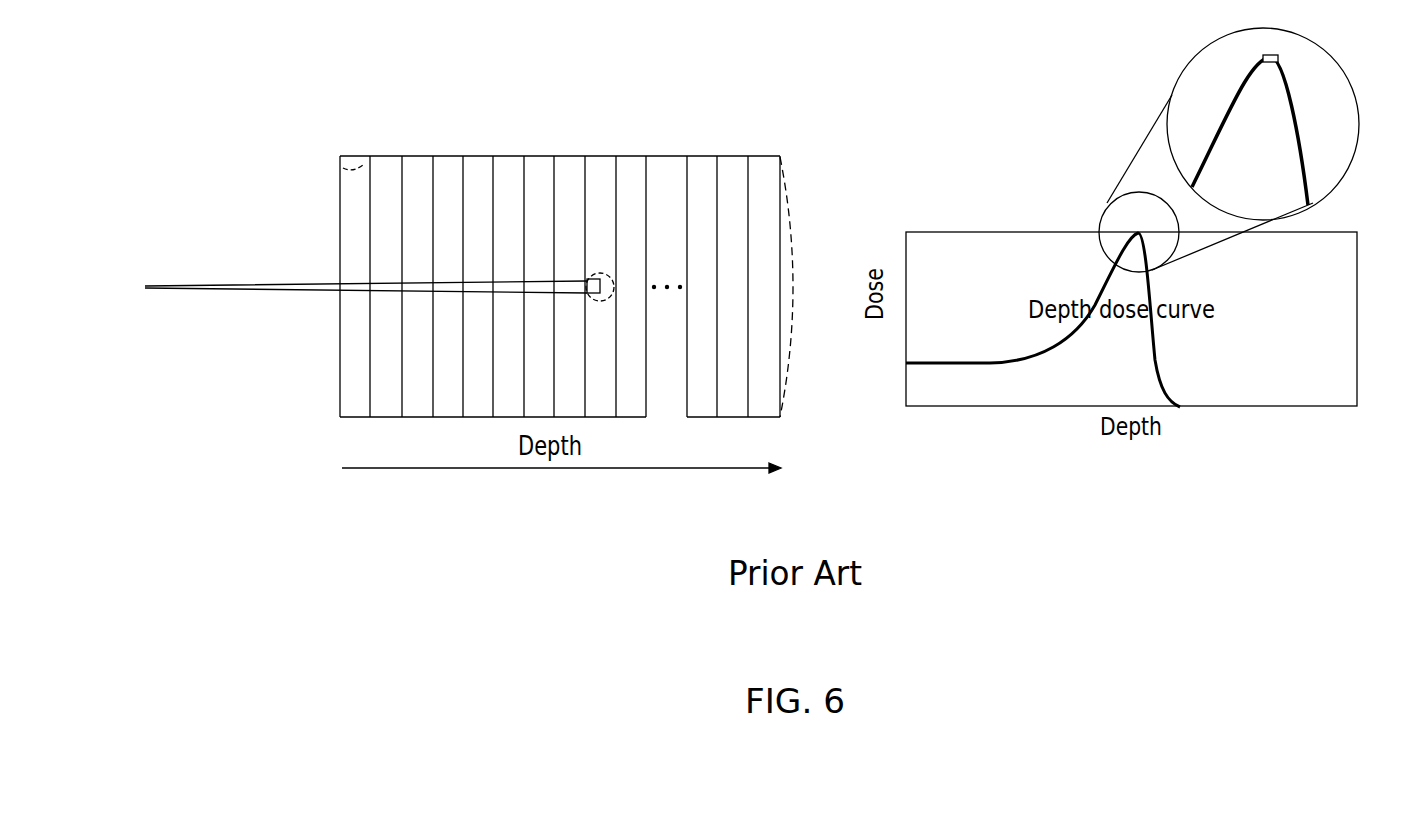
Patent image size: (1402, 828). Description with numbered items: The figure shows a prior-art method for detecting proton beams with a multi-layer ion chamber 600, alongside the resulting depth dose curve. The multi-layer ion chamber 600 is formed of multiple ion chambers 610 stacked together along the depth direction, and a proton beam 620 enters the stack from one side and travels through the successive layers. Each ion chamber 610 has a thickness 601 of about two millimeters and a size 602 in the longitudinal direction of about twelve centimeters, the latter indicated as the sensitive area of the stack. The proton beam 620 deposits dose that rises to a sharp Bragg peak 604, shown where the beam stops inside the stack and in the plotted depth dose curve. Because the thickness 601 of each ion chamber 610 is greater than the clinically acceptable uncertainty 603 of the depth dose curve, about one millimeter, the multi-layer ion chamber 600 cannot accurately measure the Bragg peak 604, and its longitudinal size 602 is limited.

The multi-layer ion chamber 600 is at (780, 150).
The thickness 601 is at (340, 165).
The size in a longitudinal direction 602 is at (790, 200).
The clinically acceptable uncertainty 603 is at (1271, 63).
The Bragg peak 604 is at (607, 300).
The ion chamber 610 is at (385, 400).
The proton beam 620 is at (190, 285).